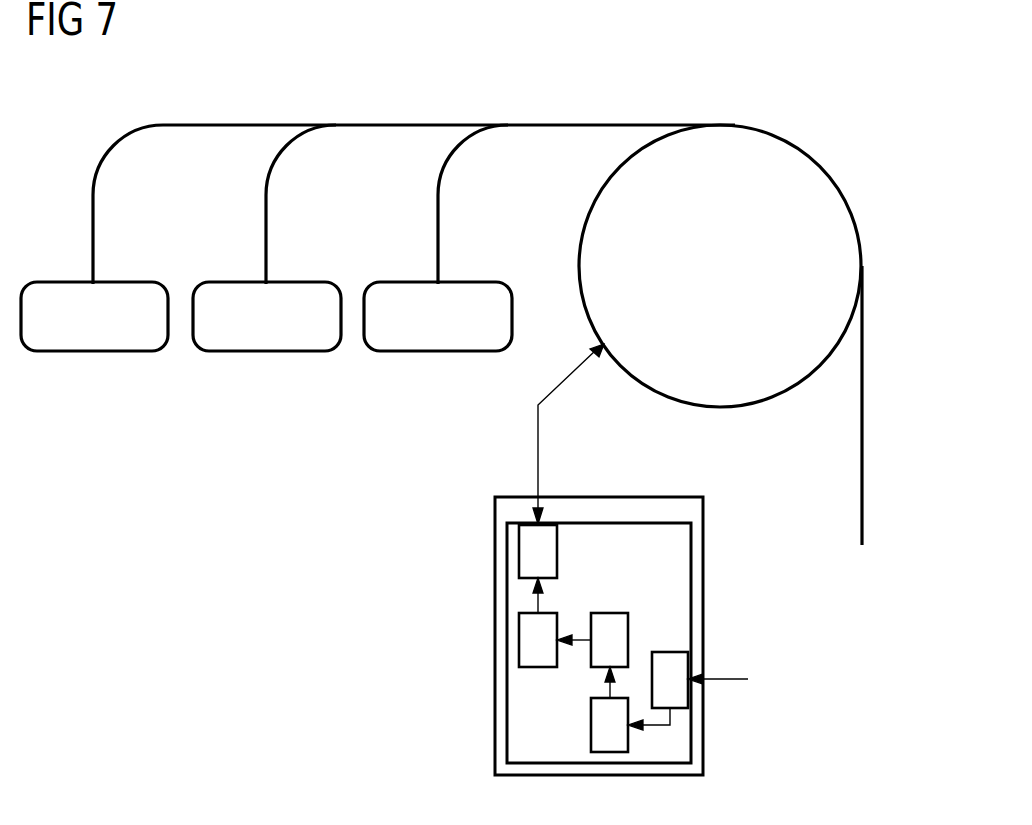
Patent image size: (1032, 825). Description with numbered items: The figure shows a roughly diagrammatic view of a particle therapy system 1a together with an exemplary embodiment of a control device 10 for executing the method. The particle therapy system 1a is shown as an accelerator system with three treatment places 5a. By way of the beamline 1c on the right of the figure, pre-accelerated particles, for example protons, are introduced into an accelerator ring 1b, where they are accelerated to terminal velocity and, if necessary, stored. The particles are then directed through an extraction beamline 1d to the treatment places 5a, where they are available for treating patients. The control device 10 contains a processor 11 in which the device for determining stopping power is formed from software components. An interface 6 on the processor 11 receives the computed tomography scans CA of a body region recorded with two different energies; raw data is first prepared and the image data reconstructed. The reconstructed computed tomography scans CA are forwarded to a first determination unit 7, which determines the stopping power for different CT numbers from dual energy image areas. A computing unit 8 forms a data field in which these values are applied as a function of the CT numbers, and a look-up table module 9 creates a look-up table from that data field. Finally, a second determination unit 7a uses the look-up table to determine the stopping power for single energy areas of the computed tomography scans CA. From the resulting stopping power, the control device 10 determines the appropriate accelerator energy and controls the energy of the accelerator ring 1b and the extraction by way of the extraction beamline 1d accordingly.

The particle therapy system 1a is at (304, 521).
The accelerator ring 1b is at (702, 123).
The beamline 1c is at (864, 405).
The extraction beamline 1d is at (432, 123).
The treatment places 5a is at (95, 353).
The interface 6 is at (672, 662).
The first determination unit 7 is at (591, 733).
The second determination unit 7a is at (528, 552).
The computing unit 8 is at (607, 612).
The look-up table module 9 is at (519, 622).
The control device 10 is at (647, 497).
The processor 11 is at (592, 522).
The computed tomography scans CA is at (727, 679).